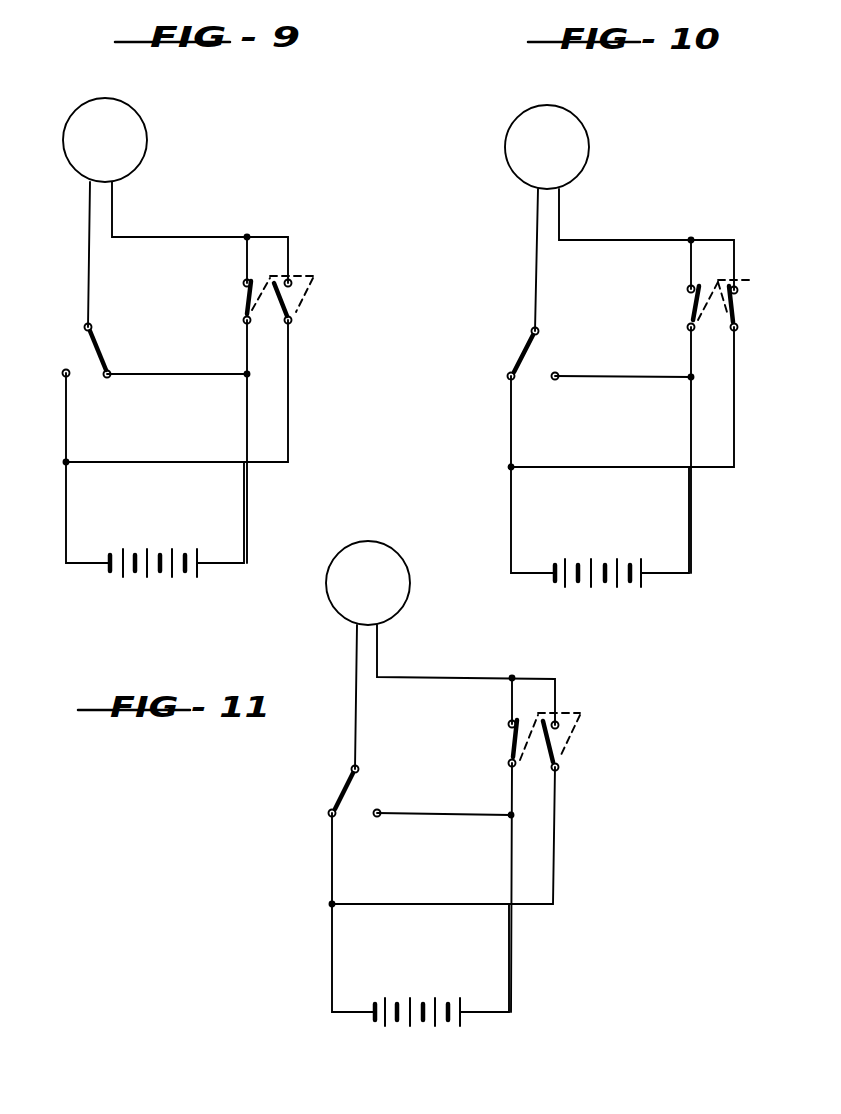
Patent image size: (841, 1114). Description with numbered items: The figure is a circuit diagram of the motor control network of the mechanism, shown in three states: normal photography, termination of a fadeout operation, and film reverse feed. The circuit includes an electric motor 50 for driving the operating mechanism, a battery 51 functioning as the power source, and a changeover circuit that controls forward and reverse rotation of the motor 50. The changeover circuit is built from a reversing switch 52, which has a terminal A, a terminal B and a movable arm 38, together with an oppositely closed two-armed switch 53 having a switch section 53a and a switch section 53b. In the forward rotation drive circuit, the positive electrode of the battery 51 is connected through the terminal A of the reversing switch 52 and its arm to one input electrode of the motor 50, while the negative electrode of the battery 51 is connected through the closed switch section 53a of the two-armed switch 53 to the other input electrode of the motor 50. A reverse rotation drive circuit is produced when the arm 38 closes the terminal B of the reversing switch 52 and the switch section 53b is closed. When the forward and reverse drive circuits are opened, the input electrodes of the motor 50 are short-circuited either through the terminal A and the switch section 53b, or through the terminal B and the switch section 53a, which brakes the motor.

In FIG. 9, the electric motor 50 is at (140, 166).
In FIG. 10, the electric motor 50 is at (582, 162).
In FIG. 11, the electric motor 50 is at (409, 582).
In FIG. 9, the battery 51 is at (158, 570).
In FIG. 10, the battery 51 is at (615, 581).
In FIG. 11, the battery 51 is at (432, 1018).
In FIG. 9, the arm 38 is at (99, 350).
In FIG. 10, the arm 38 is at (537, 350).
In FIG. 11, the arm 38 is at (357, 797).
In FIG. 9, the reversing switch 52 is at (90, 379).
In FIG. 10, the reversing switch 52 is at (537, 380).
In FIG. 11, the reversing switch 52 is at (355, 817).
In FIG. 9, the two-armed switch 53 is at (285, 292).
In FIG. 10, the two-armed switch 53 is at (742, 298).
In FIG. 11, the two-armed switch 53 is at (570, 726).
In FIG. 9, the switch section 53a is at (293, 302).
In FIG. 10, the switch section 53a is at (737, 309).
In FIG. 11, the switch section 53a is at (557, 748).
In FIG. 9, the switch section 53b is at (250, 300).
In FIG. 10, the switch section 53b is at (694, 305).
In FIG. 11, the switch section 53b is at (510, 746).
In FIG. 9, the terminal A is at (112, 377).
In FIG. 10, the terminal A is at (558, 380).
In FIG. 11, the terminal A is at (379, 818).
In FIG. 9, the terminal B is at (62, 378).
In FIG. 10, the terminal B is at (508, 380).
In FIG. 11, the terminal B is at (328, 815).